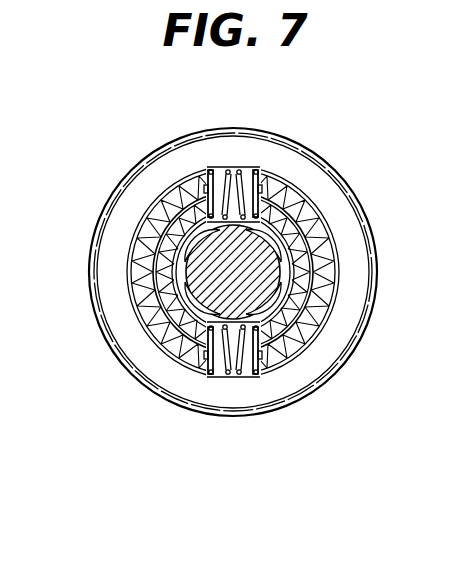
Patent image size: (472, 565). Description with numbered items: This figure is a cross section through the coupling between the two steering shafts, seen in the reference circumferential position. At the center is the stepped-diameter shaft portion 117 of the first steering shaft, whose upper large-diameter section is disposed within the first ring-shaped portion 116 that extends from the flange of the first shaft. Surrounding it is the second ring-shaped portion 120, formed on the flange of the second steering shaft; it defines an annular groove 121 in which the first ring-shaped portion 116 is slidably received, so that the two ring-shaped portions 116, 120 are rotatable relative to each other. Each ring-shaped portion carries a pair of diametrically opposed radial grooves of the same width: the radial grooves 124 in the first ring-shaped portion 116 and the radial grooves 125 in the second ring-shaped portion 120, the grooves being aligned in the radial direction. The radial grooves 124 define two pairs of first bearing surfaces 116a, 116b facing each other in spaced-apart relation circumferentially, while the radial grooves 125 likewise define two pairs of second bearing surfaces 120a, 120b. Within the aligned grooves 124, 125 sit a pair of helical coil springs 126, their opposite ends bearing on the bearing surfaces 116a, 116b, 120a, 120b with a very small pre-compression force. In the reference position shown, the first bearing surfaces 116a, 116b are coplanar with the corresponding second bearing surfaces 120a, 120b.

The first ring-shaped portion 116 is at (154, 262).
The first bearing surface 116a is at (262, 189).
The first bearing surface 116b is at (153, 215).
The stepped-diameter shaft portion 117 is at (268, 279).
The second ring-shaped portion 120 is at (126, 191).
The second bearing surface 120a is at (258, 170).
The second bearing surface 120b is at (203, 133).
The annular groove 121 is at (160, 238).
The radial groove 124 is at (256, 170).
The radial groove 125 is at (256, 170).
The helical coil spring 126 is at (233, 195).